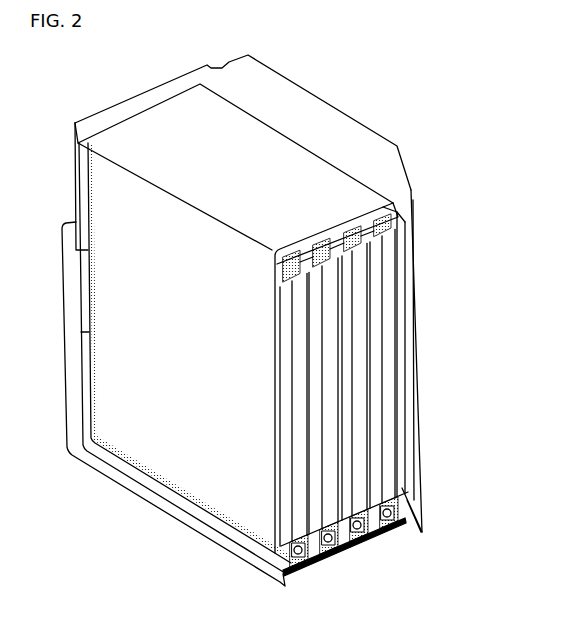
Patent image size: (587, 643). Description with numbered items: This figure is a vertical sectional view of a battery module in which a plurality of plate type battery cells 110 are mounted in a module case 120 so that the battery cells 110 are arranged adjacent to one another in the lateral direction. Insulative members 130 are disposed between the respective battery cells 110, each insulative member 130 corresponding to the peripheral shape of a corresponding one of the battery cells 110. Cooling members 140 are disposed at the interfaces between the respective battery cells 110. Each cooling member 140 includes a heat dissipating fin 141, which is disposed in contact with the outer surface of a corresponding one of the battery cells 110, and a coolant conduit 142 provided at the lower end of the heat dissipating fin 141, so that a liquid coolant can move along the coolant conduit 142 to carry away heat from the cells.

The plate type battery cells 110 is at (394, 264).
The module case 120 is at (336, 131).
The insulative members 130 is at (280, 582).
The cooling members 140 is at (391, 459).
The heat dissipating fin 141 is at (387, 405).
The coolant conduit 142 is at (403, 488).